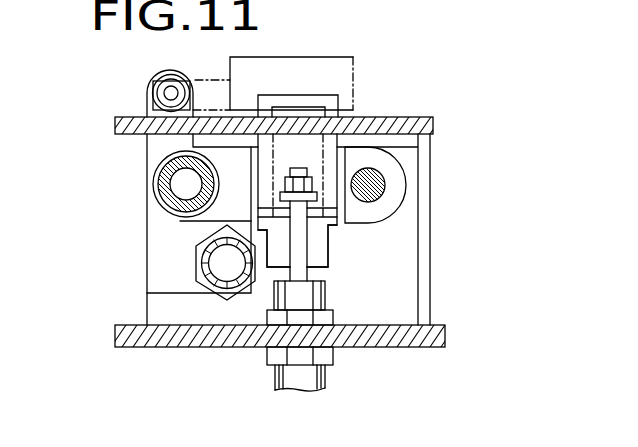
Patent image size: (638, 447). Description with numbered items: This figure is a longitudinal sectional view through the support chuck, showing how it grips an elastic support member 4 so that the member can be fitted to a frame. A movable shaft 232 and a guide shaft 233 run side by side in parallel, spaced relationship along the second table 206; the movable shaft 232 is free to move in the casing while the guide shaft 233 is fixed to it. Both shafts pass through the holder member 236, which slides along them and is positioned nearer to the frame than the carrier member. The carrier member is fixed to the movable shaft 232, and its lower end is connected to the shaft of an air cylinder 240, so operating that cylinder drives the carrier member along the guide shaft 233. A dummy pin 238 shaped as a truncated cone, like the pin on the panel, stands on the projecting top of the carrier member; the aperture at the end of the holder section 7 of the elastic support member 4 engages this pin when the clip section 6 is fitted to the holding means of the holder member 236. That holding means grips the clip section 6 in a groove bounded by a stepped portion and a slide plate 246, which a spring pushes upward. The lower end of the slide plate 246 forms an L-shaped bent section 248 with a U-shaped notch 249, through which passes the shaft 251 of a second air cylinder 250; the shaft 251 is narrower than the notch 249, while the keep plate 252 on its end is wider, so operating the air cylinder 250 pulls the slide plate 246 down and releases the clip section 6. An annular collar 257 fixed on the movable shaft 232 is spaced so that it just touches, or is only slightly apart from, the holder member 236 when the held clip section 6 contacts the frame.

The elastic support member 4 is at (224, 52).
The clip section 6 is at (291, 45).
The holder section 7 is at (201, 66).
The second table 206 is at (447, 331).
The movable shaft 232 is at (170, 182).
The guide shaft 233 is at (385, 185).
The holder member 236 is at (317, 97).
The dummy pin 238 is at (171, 93).
The air cylinder 240 is at (214, 287).
The slide plate 246 is at (280, 107).
The bent section 248 is at (312, 215).
The U-shaped notch 249 is at (328, 263).
The air cylinder 250 is at (274, 369).
The shaft 251 is at (311, 280).
The keep plate 252 is at (312, 168).
The annular collar 257 is at (199, 255).